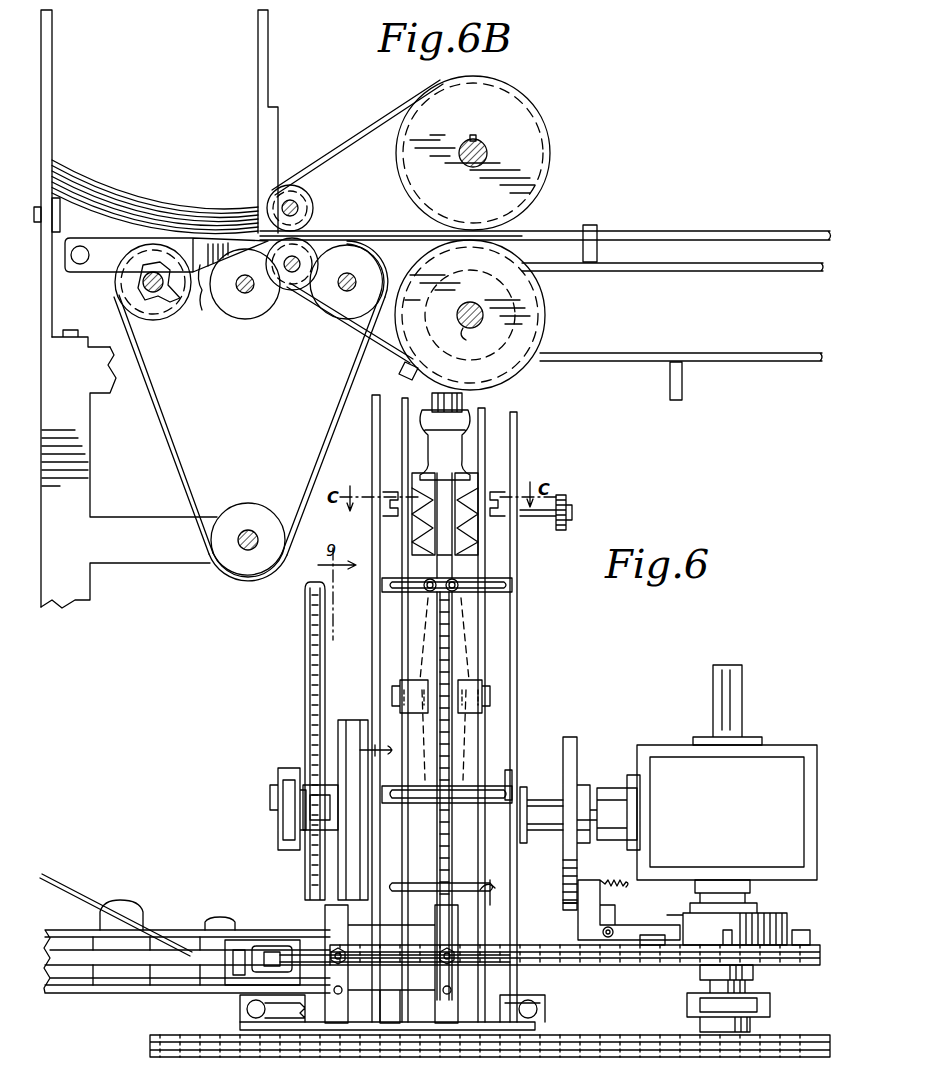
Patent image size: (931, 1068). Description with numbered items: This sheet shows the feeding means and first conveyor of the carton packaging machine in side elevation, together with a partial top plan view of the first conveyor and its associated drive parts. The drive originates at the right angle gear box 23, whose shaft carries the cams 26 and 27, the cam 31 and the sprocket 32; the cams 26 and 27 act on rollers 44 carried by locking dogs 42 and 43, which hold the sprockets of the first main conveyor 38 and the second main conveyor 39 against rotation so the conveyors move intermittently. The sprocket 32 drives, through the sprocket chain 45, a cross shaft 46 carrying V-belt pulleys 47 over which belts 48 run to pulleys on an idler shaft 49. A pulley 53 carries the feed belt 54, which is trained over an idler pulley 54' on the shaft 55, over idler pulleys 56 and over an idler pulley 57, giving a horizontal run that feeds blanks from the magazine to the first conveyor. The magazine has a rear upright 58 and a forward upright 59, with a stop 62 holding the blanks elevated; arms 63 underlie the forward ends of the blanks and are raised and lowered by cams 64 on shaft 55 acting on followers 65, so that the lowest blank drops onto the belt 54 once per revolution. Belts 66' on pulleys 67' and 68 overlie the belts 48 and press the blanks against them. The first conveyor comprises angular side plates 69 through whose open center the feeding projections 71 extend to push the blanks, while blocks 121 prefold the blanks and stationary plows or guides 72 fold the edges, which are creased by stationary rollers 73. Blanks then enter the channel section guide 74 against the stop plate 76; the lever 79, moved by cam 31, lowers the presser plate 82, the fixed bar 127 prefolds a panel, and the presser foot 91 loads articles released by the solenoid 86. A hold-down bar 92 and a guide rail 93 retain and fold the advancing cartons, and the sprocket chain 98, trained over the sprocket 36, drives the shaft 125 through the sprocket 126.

In FIG. 6, the right angle gear box 23 is at (770, 758).
In FIG. 6, the cam 26 is at (577, 752).
In FIG. 6, the cam 27 is at (518, 768).
In FIG. 6, the cam 31 is at (348, 720).
In FIG. 6, the sprocket 32 is at (300, 876).
In FIG. 6, the sprocket 36 is at (776, 1032).
In FIG. 6B, the first main conveyor 38 is at (642, 270).
In FIG. 6, the second main conveyor 39 is at (574, 965).
In FIG. 6, the locking dog 42 is at (496, 900).
In FIG. 6, the locking dog 43 is at (578, 917).
In FIG. 6, the roller 44 is at (563, 895).
In FIG. 6, the sprocket chain 45 is at (305, 637).
In FIG. 6B, the cross shaft 46 is at (473, 339).
In FIG. 6B, the V-belt pulleys 47 is at (508, 316).
In FIG. 6B, the belts 48 is at (342, 320).
In FIG. 6B, the idler shaft 49 is at (294, 290).
In FIG. 6B, the pulley 53 is at (340, 320).
In FIG. 6B, the feed belt 54 is at (251, 411).
In FIG. 6, the feed belt 54 is at (790, 975).
In FIG. 6B, the idler pulley 54' is at (165, 333).
In FIG. 6B, the shaft 55 is at (140, 285).
In FIG. 6B, the idler pulleys 56 is at (238, 312).
In FIG. 6B, the idler pulley 57 is at (260, 518).
In FIG. 6B, the rear upright 58 is at (52, 95).
In FIG. 6B, the forward upright 59 is at (268, 60).
In FIG. 6B, the stop 62 is at (60, 218).
In FIG. 6B, the arms 63 is at (200, 289).
In FIG. 6B, the cams 64 is at (170, 300).
In FIG. 6B, the followers 65 is at (140, 240).
In FIG. 6B, the belts 66' is at (357, 137).
In FIG. 6B, the pulleys 67' is at (490, 153).
In FIG. 6B, the pulleys 68 is at (310, 200).
In FIG. 6, the angular side plates 69 is at (485, 634).
In FIG. 6B, the feeding projections 71 is at (593, 225).
In FIG. 6, the plows or guides 72 is at (472, 648).
In FIG. 6, the stationary rollers 73 is at (408, 680).
In FIG. 6, the channel section guide 74 is at (175, 930).
In FIG. 6, the stop plate 76 is at (460, 995).
In FIG. 6, the lever 79 is at (366, 749).
In FIG. 6, the presser plate 82 is at (470, 960).
In FIG. 6, the solenoid 86 is at (272, 945).
In FIG. 6, the presser foot 91 is at (352, 975).
In FIG. 6, the hold-down bar 92 is at (172, 960).
In FIG. 6, the guide rail 93 is at (78, 892).
In FIG. 6, the sprocket chain 98 is at (592, 1026).
In FIG. 6, the blocks 121 is at (412, 483).
In FIG. 6, the shaft 125 is at (530, 520).
In FIG. 6, the sprocket 126 is at (566, 495).
In FIG. 6, the fixed bar 127 is at (345, 880).